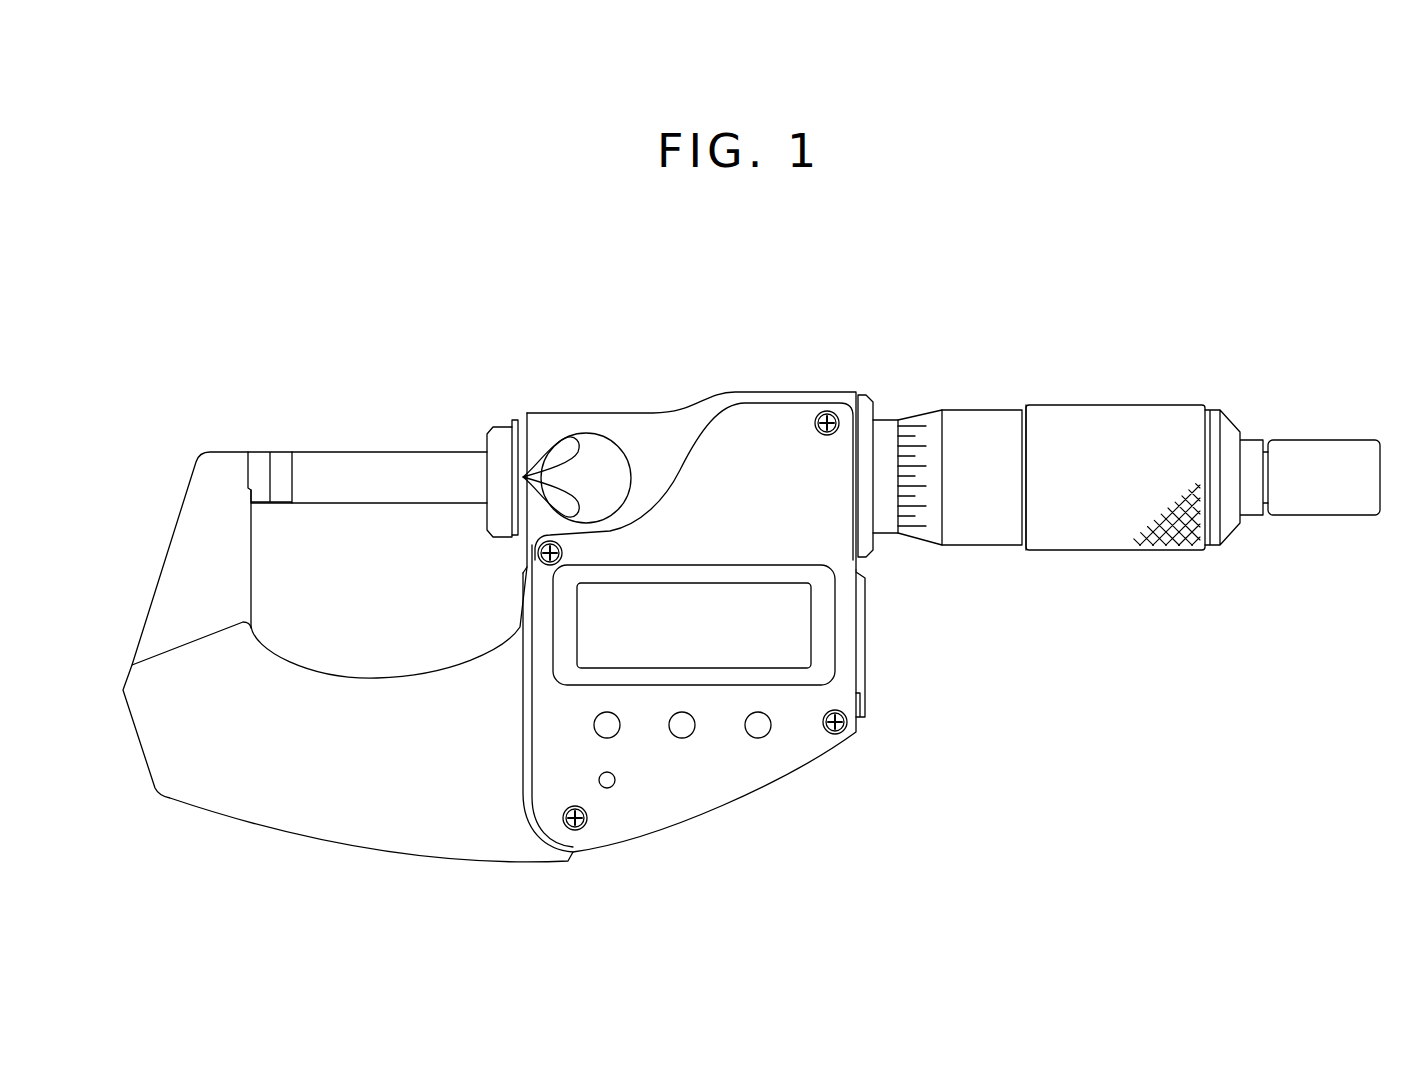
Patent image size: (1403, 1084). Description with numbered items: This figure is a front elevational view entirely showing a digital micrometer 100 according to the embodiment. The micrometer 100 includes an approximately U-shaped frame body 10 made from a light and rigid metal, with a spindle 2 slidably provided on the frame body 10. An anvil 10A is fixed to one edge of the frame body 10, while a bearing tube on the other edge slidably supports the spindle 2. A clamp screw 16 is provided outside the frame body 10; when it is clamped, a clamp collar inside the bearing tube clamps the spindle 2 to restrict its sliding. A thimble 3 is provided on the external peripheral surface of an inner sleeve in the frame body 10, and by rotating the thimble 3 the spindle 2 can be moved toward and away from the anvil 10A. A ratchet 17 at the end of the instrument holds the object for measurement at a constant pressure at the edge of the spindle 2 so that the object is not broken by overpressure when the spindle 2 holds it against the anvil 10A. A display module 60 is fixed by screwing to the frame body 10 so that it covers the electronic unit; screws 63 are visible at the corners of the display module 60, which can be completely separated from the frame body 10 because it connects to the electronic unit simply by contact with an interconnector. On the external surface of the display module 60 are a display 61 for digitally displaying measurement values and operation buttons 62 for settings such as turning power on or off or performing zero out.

The digital micrometer 100 is at (937, 312).
The frame body 10 is at (733, 392).
The anvil 10A is at (257, 452).
The spindle 2 is at (382, 452).
The clamp screw 16 is at (577, 430).
The thimble 3 is at (993, 405).
The ratchet 17 is at (1305, 448).
The display module 60 is at (818, 762).
The display 61 is at (800, 643).
The operation buttons 62 is at (607, 738).
The screws 63 is at (580, 830).